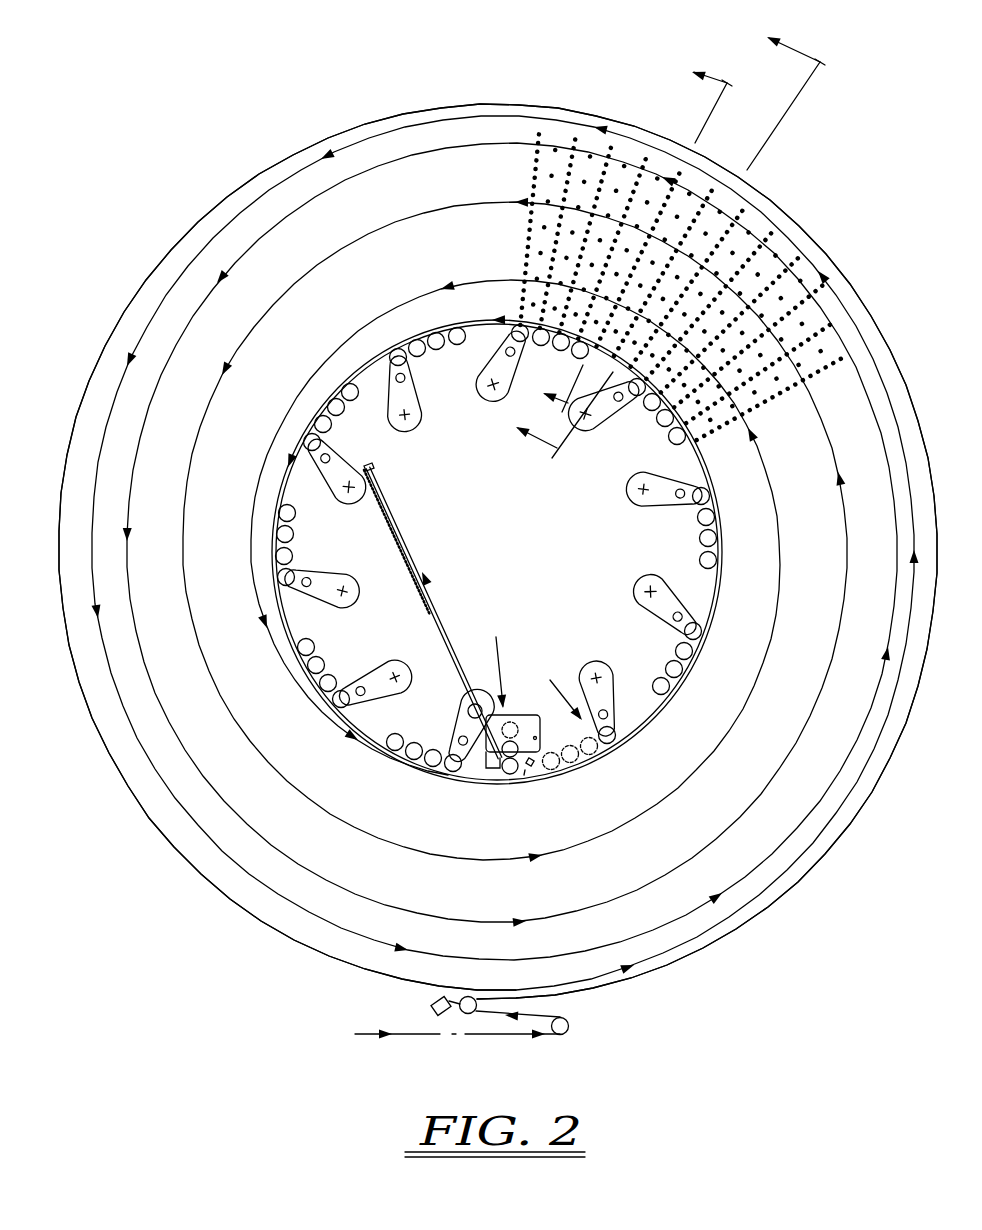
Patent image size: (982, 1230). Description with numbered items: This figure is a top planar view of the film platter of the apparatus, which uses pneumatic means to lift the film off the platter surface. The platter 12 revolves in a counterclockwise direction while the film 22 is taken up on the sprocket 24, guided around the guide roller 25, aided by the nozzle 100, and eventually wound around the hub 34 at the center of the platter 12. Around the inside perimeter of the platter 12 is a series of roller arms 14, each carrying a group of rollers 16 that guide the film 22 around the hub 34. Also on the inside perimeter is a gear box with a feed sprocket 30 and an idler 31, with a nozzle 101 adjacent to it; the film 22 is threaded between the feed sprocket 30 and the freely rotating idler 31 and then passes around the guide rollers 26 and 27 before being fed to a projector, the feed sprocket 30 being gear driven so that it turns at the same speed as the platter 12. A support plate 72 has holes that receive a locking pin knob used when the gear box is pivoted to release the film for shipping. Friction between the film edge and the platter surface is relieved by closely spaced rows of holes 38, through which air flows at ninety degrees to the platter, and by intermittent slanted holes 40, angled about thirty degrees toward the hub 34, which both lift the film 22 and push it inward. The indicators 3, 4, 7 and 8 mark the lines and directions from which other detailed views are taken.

The platter 12 is at (646, 867).
The film 22 is at (94, 494).
The hub 34 is at (698, 454).
The rows of holes 38 is at (540, 126).
The slanted holes 40 is at (726, 204).
The rollers 16 is at (352, 398).
The roller arms 14 is at (418, 422).
The guide roller 27 is at (376, 472).
The guide roller 26 is at (476, 696).
The support plate 72 is at (530, 715).
The feed sprocket 30 is at (510, 775).
The idler 31 is at (529, 773).
The nozzle 101 is at (524, 772).
The section arrow 8 is at (497, 659).
The section arrow 7 is at (559, 689).
The section line 3 is at (626, 235).
The section line 4 is at (661, 238).
The guide roller 25 is at (469, 996).
The sprocket 24 is at (569, 1027).
The nozzle 100 is at (431, 1008).